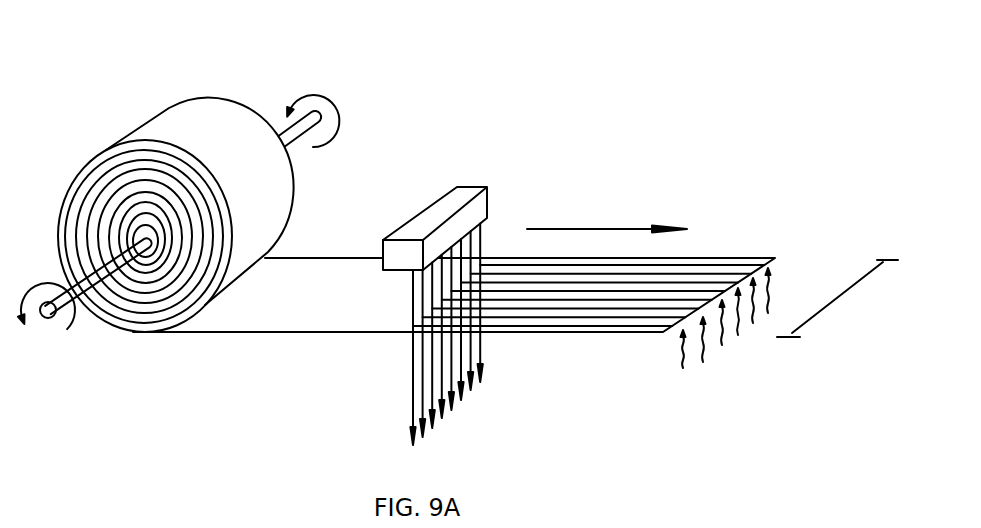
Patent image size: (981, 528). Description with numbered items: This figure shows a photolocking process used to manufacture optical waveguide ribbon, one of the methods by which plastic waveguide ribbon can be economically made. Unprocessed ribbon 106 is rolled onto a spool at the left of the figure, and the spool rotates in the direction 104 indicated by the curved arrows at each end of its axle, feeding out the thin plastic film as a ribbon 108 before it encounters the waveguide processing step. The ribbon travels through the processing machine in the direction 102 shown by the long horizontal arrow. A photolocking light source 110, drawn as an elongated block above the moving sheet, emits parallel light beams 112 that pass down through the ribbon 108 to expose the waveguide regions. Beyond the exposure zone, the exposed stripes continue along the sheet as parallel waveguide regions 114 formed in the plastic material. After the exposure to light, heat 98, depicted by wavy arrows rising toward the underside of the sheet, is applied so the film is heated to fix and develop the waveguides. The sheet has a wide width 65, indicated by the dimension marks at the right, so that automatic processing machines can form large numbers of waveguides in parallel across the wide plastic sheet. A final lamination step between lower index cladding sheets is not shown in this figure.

The direction ribbon moves through processing machine 102 is at (598, 227).
The direction ribbon on spool rotates 104 is at (290, 88).
The unprocessed ribbon on the spool 106 is at (178, 128).
The ribbon before it encounters the waveguide processing step 108 is at (342, 294).
The photolocking light source 110 is at (440, 210).
The light beams 112 is at (437, 422).
The waveguide regions 114 is at (712, 280).
The heat 98 is at (675, 338).
The width of plastic sheet 65 is at (788, 340).